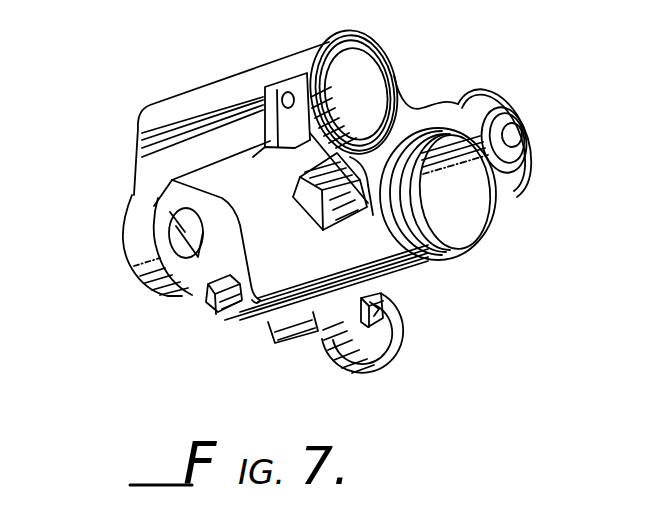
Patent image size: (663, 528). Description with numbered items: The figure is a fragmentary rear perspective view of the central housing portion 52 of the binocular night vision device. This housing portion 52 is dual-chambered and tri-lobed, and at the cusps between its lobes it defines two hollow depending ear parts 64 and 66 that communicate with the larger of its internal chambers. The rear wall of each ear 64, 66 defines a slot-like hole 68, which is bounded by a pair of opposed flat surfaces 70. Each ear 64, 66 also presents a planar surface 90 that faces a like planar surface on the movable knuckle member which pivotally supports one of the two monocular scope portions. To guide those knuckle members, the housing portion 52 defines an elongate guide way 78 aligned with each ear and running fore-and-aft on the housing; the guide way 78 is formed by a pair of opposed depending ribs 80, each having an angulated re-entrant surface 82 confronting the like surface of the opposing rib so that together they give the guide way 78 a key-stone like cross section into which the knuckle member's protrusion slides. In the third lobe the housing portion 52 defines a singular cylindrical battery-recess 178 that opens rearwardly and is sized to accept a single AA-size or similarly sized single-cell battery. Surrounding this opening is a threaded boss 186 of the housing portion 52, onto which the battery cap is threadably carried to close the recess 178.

The central housing portion 52 is at (287, 50).
The guide way 78 is at (248, 167).
The depending rib 80 is at (266, 147).
The angulated re-entrant surface 82 is at (300, 178).
The ear part 66 is at (133, 220).
The slot-like hole 68 is at (176, 210).
The flat surface 70 is at (200, 231).
The planar surface 90 is at (211, 280).
The ear part 64 is at (400, 340).
The cylindrical battery-recess 178 is at (485, 212).
The threaded boss 186 is at (481, 243).